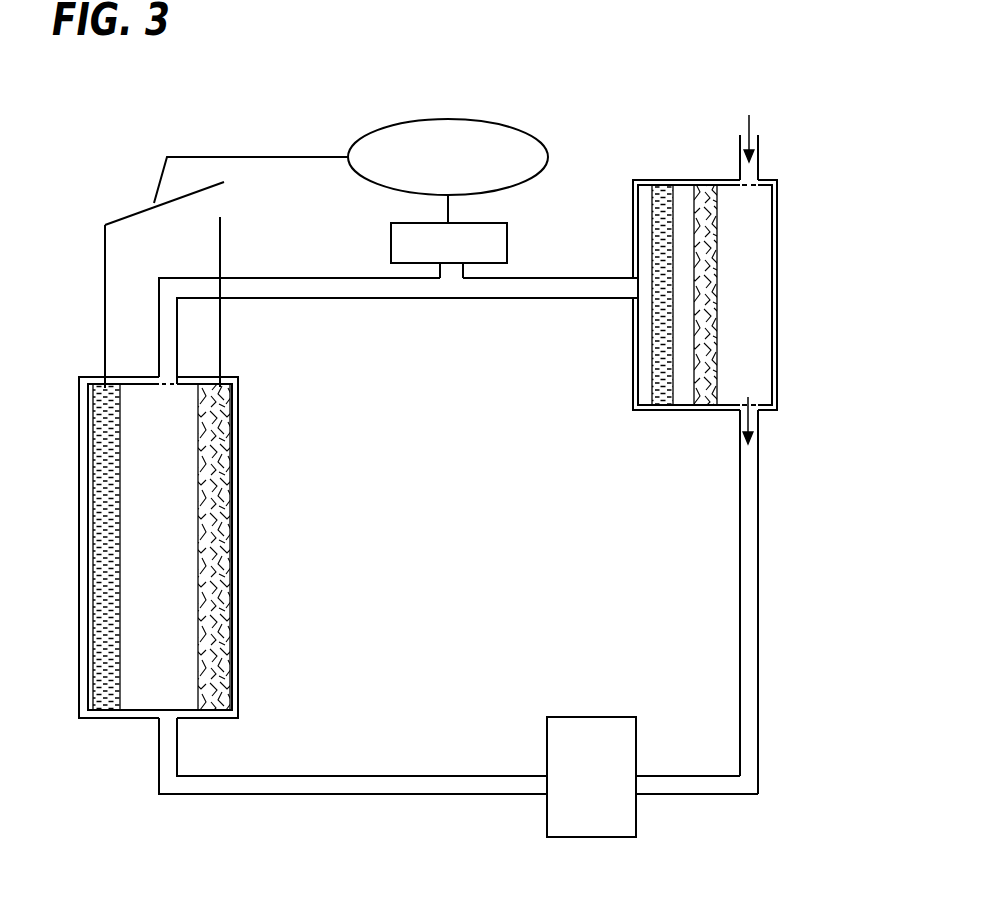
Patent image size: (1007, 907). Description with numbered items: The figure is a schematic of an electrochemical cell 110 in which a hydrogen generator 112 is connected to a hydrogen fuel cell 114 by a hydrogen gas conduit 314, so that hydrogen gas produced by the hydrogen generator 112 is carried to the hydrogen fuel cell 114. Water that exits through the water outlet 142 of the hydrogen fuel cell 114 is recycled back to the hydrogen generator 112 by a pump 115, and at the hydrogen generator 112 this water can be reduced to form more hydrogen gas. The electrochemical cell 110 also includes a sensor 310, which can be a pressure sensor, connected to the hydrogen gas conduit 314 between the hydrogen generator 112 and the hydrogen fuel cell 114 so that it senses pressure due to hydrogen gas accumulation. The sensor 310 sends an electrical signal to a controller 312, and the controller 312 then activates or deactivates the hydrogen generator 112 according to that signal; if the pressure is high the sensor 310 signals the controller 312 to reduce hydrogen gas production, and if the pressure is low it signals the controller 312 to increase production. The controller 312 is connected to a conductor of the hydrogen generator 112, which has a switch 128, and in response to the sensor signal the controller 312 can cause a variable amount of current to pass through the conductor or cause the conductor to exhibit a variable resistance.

The electrochemical cell 110 is at (148, 146).
The switch 128 is at (132, 217).
The controller 312 is at (410, 120).
The sensor 310 is at (507, 243).
The hydrogen gas conduit 314 is at (330, 296).
The hydrogen generator 112 is at (148, 456).
The hydrogen fuel cell 114 is at (752, 237).
The water outlet 142 is at (748, 397).
The pump 115 is at (590, 822).